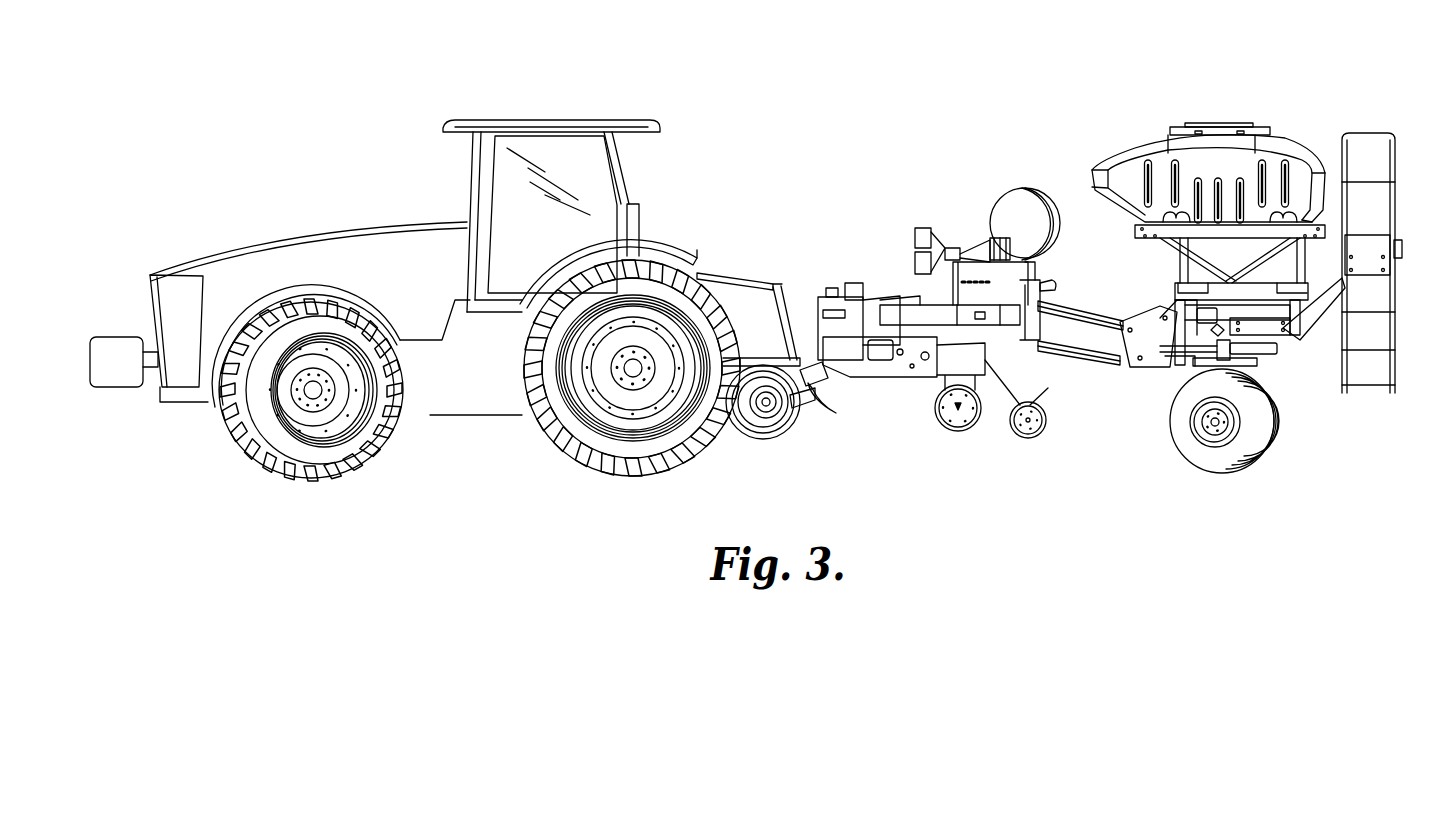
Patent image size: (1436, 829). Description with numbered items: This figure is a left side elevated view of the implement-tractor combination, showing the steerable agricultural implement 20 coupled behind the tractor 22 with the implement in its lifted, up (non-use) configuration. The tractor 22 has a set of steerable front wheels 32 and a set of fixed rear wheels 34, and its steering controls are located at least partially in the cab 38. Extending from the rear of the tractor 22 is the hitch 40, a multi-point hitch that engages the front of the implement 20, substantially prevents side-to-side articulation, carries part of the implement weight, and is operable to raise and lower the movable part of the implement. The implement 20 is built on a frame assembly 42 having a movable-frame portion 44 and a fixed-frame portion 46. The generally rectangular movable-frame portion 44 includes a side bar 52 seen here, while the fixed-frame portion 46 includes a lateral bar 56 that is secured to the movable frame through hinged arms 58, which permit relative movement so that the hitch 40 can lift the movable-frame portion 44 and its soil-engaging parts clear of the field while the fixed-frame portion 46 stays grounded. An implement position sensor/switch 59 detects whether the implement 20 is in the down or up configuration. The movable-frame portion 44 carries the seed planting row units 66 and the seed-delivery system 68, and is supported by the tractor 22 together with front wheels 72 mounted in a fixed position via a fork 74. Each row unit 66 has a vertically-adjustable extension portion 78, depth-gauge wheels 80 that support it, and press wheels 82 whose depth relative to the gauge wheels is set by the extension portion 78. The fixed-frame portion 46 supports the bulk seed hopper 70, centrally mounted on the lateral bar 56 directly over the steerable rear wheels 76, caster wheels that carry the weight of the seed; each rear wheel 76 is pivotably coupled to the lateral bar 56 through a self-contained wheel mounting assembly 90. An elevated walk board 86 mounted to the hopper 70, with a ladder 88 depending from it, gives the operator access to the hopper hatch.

The steerable agricultural implement 20 is at (1234, 108).
The tractor 22 is at (493, 106).
The front wheels 32 is at (277, 460).
The rear wheels 34 is at (587, 458).
The cab 38 is at (612, 162).
The hitch 40 is at (734, 274).
The frame assembly 42 is at (1003, 183).
The movable-frame portion 44 is at (915, 212).
The fixed-frame portion 46 is at (1156, 126).
The side bar 52 is at (950, 322).
The lateral bar 56 is at (1200, 313).
The hinged arms 58 is at (1075, 322).
The implement position sensor/switch 59 is at (1052, 318).
The seed planting row units 66 is at (963, 441).
The seed-delivery system 68 is at (1028, 200).
The bulk seed hopper 70 is at (1290, 150).
The front wheels 72 is at (767, 447).
The fork 74 is at (824, 410).
The steerable rear wheels 76 is at (1187, 457).
The vertically-adjustable extension portion 78 is at (905, 363).
The depth-gauge wheels 80 is at (948, 427).
The press wheels 82 is at (1013, 433).
The elevated walk board 86 is at (1372, 240).
The ladder 88 is at (1393, 348).
The wheel mounting assembly 90 is at (1272, 380).